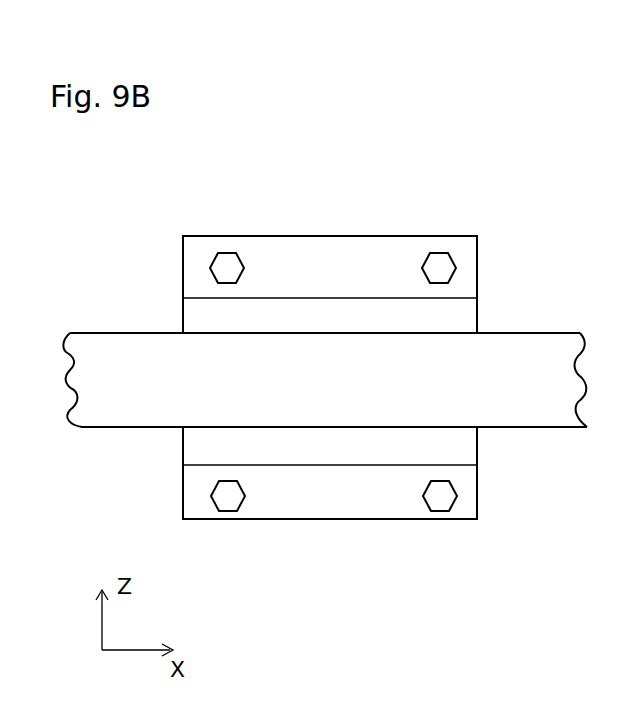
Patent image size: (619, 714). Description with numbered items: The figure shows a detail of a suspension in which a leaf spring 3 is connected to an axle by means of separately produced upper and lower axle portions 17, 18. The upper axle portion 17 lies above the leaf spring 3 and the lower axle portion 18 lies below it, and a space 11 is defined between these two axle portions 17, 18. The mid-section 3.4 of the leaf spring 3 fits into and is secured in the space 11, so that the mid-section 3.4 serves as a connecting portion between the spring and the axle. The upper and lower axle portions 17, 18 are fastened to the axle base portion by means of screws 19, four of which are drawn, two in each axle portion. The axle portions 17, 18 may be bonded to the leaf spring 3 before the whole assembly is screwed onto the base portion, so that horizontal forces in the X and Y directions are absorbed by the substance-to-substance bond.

The leaf spring 3 is at (533, 338).
The mid-section of the leaf spring 3.4 is at (221, 332).
The space 11 is at (328, 346).
The upper axle portion 17 is at (383, 262).
The lower axle portion 18 is at (328, 515).
The screws 19 is at (222, 255).